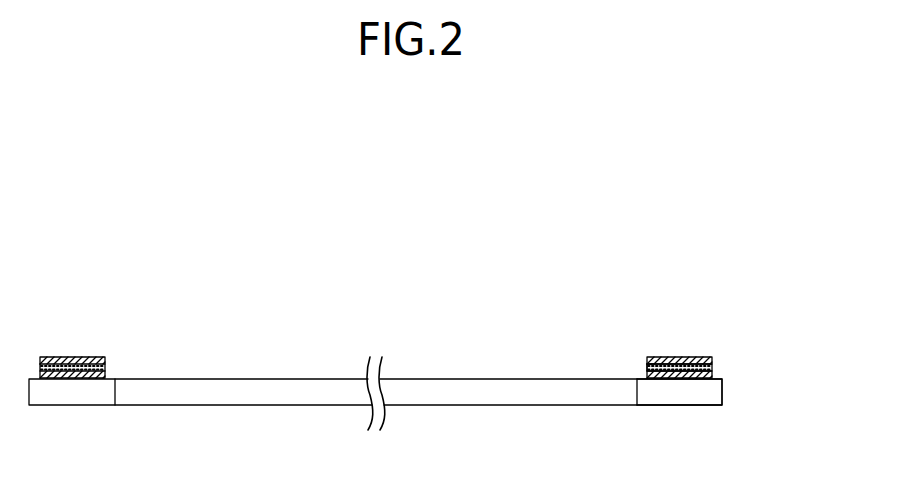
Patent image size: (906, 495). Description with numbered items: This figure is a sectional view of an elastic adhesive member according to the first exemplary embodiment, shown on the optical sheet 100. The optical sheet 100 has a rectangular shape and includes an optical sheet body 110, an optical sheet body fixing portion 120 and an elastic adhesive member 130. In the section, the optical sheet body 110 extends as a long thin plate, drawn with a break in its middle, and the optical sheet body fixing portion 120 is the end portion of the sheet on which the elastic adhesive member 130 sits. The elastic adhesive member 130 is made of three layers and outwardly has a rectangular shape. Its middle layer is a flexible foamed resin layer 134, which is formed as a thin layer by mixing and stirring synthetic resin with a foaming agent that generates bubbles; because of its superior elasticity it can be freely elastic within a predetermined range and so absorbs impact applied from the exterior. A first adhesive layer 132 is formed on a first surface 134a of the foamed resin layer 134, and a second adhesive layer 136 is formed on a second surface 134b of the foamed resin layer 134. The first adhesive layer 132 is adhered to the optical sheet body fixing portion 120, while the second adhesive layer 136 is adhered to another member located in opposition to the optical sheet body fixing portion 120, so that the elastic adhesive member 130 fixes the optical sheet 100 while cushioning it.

The optical sheet 100 is at (497, 288).
The optical sheet body 110 is at (486, 408).
The optical sheet body fixing portion 120 is at (708, 408).
The elastic adhesive member 130 is at (796, 323).
The first adhesive layer 132 is at (714, 378).
The foamed resin layer 134 is at (712, 369).
The first surface 134a is at (646, 369).
The second surface 134b is at (647, 366).
The second adhesive layer 136 is at (712, 358).